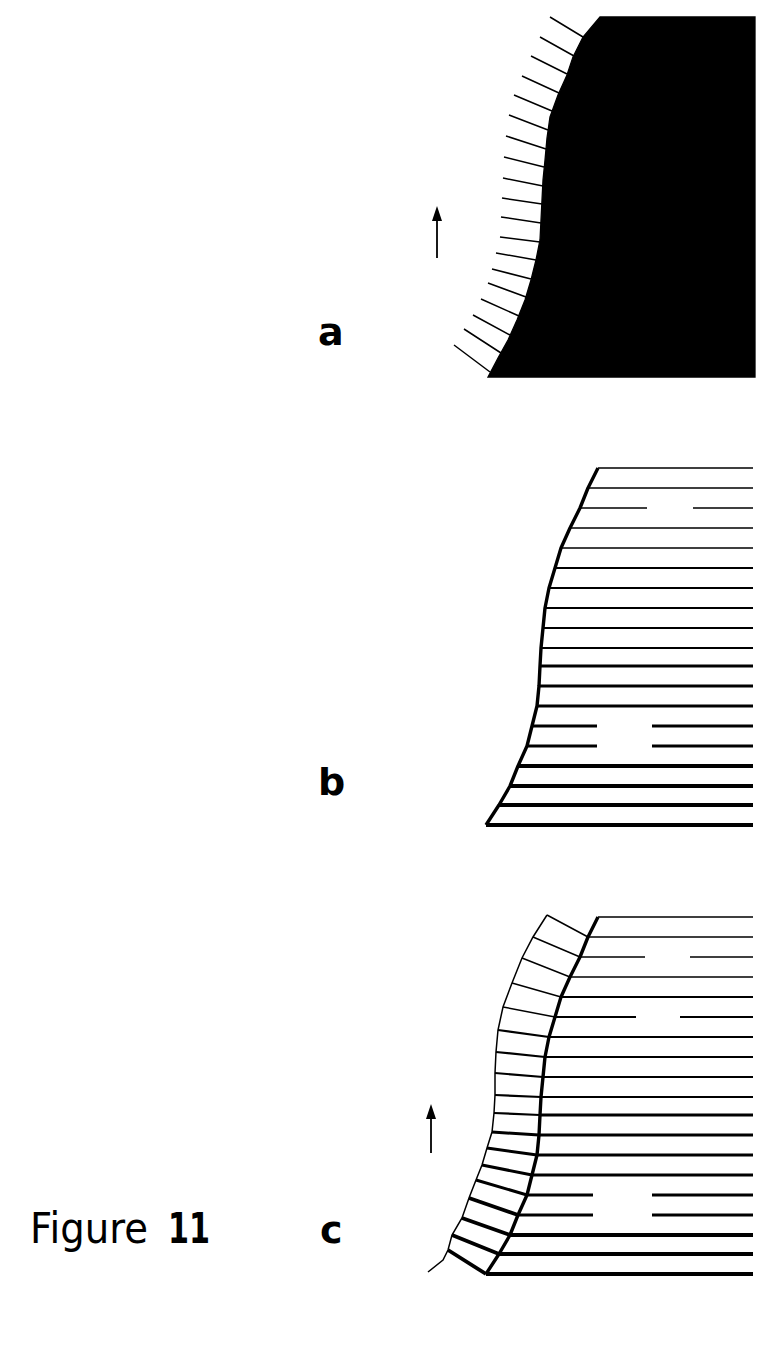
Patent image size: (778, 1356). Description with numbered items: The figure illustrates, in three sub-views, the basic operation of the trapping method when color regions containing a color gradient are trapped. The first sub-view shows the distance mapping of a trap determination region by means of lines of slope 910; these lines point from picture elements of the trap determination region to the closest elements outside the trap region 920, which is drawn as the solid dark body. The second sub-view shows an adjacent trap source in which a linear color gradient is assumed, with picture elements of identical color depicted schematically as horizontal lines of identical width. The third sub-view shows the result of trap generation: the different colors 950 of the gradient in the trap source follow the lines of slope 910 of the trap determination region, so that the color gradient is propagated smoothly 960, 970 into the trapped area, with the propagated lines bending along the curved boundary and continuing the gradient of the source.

The lines of slope 910 is at (528, 95).
The trap region 920 is at (621, 197).
The different colors of a gradient 950 is at (597, 1060).
The smoothly propagated color gradient 960 is at (524, 988).
The smoothly propagated color gradient 970 is at (515, 1058).